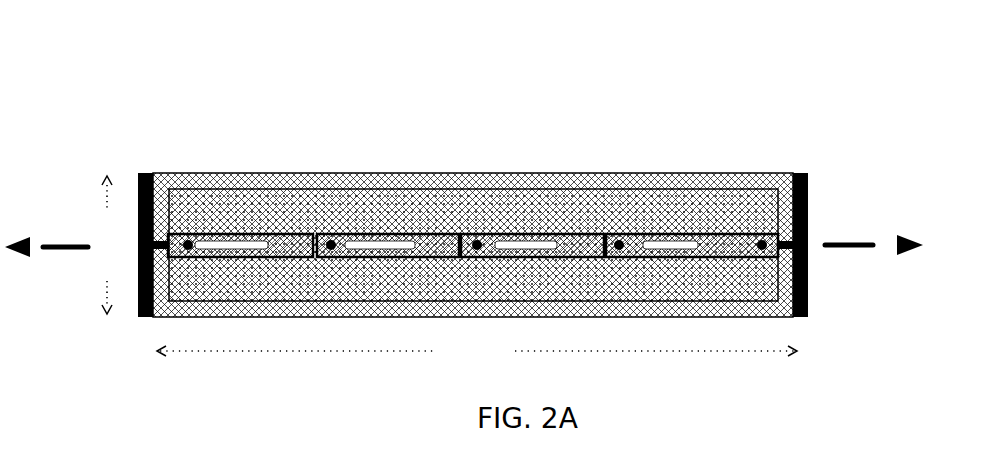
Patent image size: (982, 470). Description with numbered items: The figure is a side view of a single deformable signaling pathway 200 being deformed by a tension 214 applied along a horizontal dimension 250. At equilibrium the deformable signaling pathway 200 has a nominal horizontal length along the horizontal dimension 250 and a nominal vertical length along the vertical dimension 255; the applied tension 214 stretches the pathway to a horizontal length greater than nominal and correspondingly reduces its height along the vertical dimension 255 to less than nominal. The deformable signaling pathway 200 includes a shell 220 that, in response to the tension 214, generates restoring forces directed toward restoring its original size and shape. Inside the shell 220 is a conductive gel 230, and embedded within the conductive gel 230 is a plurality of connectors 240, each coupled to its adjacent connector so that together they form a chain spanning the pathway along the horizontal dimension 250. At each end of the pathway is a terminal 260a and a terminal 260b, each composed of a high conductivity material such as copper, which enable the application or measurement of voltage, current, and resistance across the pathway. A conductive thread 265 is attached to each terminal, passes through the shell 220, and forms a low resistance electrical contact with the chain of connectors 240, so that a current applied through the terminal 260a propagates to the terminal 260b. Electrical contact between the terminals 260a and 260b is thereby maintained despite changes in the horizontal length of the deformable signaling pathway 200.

The deformable signaling pathway 200 is at (25, 11).
The tension 214 is at (60, 252).
The shell 220 is at (390, 185).
The conductive gel 230 is at (532, 200).
The connectors 240 is at (718, 258).
The horizontal dimension 250 is at (302, 353).
The vertical dimension 255 is at (103, 201).
The terminal 260a is at (145, 173).
The terminal 260b is at (797, 173).
The conductive thread 265 is at (787, 240).